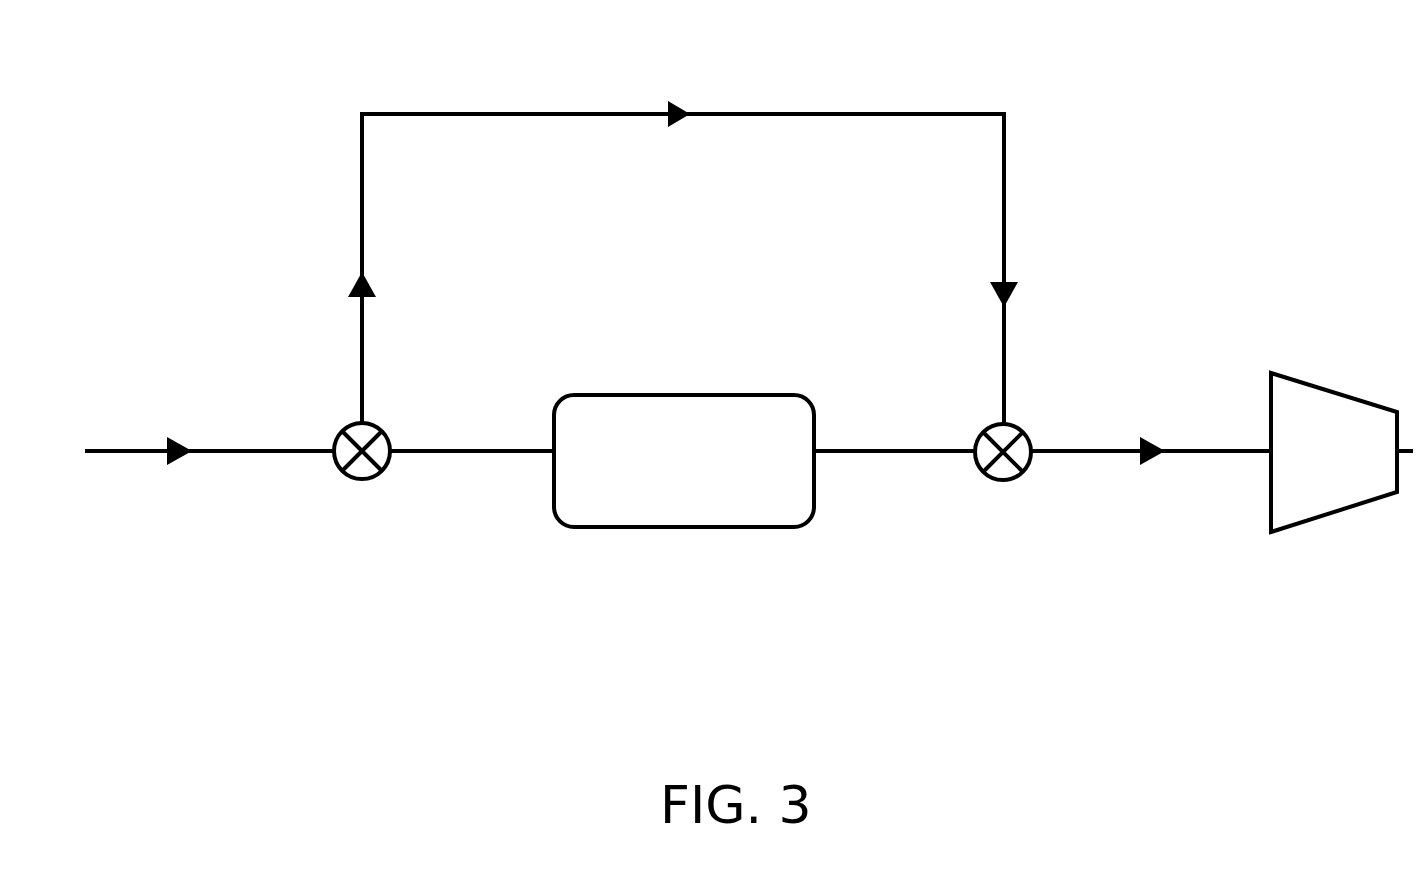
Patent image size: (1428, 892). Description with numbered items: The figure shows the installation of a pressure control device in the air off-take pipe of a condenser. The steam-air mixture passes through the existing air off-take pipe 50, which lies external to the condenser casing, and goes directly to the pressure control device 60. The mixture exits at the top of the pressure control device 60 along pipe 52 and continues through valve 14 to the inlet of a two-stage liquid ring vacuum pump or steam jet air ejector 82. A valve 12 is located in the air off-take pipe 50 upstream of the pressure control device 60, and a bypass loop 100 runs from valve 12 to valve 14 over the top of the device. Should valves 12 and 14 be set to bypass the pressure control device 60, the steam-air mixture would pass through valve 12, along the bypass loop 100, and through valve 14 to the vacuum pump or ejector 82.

The air off-take pipe 50 is at (279, 427).
The valve 12 is at (346, 502).
The pressure control device 60 is at (710, 446).
The pipe 52 is at (905, 427).
The valve 14 is at (992, 504).
The two-stage liquid ring vacuum pump or steam jet air ejector 82 is at (1333, 530).
The bypass loop 100 is at (631, 92).